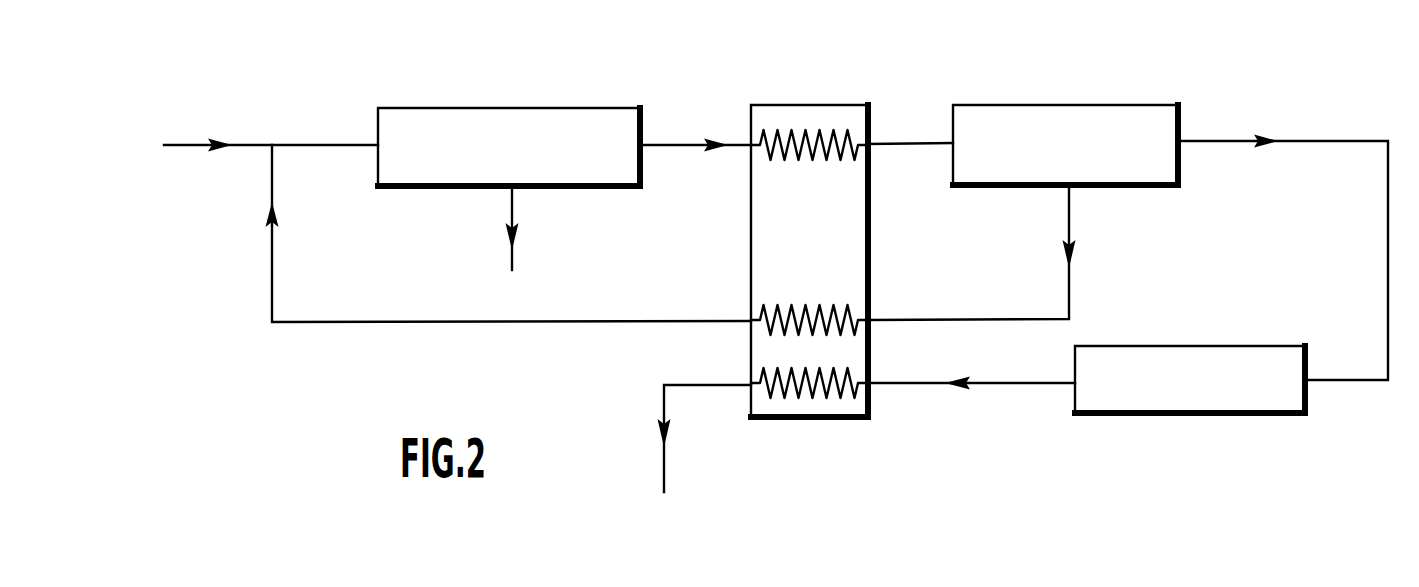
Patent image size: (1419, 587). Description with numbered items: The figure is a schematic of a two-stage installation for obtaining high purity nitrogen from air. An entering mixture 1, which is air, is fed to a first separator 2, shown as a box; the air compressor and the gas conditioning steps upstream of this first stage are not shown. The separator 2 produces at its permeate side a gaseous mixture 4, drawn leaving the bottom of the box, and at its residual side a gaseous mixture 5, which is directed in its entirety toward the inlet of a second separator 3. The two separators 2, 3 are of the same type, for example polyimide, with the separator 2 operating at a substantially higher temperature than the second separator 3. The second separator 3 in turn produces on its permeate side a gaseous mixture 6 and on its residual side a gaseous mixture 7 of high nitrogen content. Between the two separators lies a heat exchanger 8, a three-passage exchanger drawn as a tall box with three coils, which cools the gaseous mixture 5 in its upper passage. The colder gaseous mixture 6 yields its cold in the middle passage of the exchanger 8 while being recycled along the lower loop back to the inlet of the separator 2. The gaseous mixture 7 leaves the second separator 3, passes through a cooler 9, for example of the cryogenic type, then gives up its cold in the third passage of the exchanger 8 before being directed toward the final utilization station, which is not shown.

The entering mixture 1 is at (197, 128).
The separator 2 is at (543, 98).
The second separator 3 is at (1062, 98).
The gaseous mixture 4 is at (530, 247).
The gaseous mixture 5 is at (691, 124).
The gaseous mixture 6 is at (410, 332).
The gaseous mixture 7 is at (1218, 124).
The heat exchanger 8 is at (840, 96).
The cooler 9 is at (1106, 423).